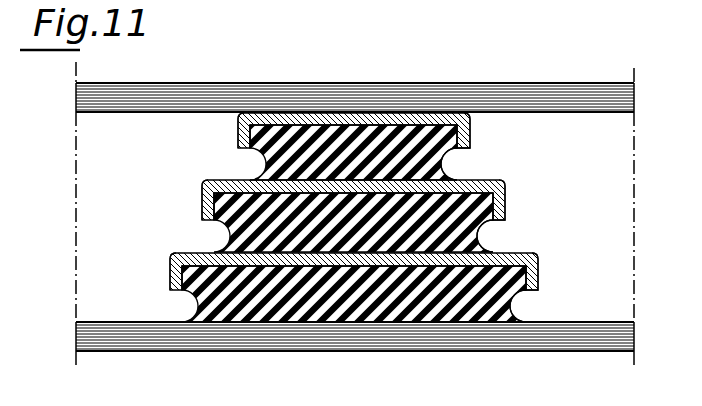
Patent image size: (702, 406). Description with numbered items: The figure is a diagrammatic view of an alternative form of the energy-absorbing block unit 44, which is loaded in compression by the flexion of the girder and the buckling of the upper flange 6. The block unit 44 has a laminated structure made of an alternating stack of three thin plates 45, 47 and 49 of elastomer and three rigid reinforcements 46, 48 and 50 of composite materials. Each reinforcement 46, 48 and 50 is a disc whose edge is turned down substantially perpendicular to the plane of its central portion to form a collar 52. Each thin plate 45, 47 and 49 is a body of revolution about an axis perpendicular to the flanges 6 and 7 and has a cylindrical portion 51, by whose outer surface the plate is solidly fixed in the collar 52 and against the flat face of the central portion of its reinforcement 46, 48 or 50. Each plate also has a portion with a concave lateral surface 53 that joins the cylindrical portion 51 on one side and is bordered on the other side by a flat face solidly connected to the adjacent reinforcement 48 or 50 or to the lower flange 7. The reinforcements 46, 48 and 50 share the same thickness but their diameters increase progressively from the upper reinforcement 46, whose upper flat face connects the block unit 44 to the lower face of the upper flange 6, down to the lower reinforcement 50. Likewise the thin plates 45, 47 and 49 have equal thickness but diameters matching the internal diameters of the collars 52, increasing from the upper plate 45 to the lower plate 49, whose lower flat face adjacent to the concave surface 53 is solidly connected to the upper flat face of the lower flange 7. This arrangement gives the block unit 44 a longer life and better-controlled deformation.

The upper flange 6 is at (548, 100).
The lower flange 7 is at (565, 335).
The energy-absorbing block unit 44 is at (196, 233).
The thin plate 45 is at (330, 142).
The reinforcement 46 is at (384, 120).
The thin plate 47 is at (238, 176).
The reinforcement 48 is at (505, 193).
The thin plate 49 is at (312, 296).
The reinforcement 50 is at (400, 270).
The cylindrical portion 51 is at (444, 128).
The collar 52 is at (246, 137).
The concave lateral surface 53 is at (445, 170).